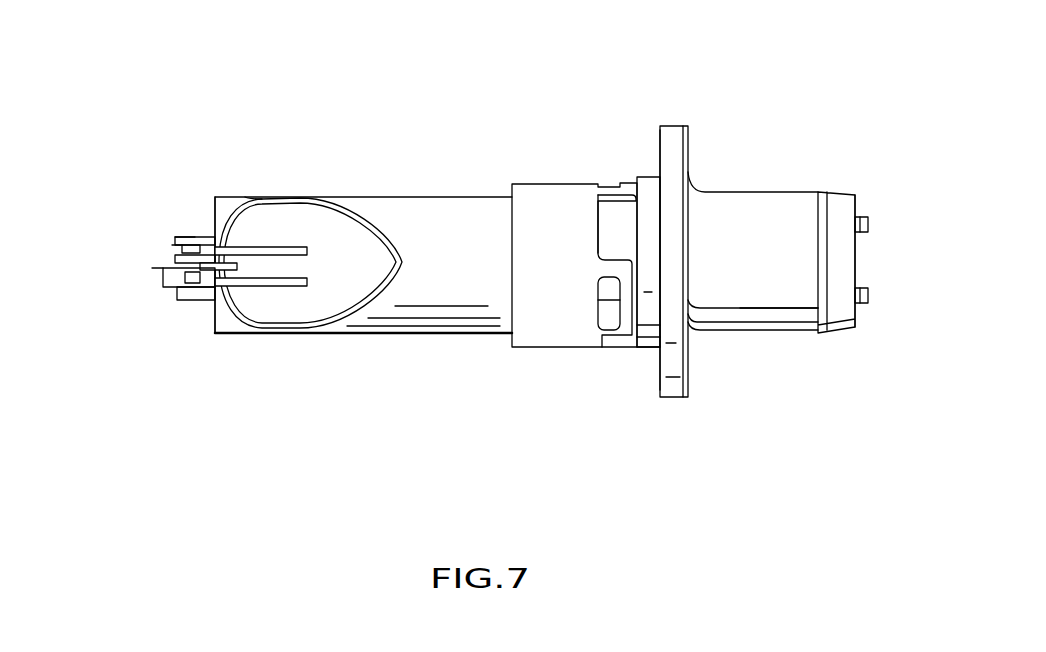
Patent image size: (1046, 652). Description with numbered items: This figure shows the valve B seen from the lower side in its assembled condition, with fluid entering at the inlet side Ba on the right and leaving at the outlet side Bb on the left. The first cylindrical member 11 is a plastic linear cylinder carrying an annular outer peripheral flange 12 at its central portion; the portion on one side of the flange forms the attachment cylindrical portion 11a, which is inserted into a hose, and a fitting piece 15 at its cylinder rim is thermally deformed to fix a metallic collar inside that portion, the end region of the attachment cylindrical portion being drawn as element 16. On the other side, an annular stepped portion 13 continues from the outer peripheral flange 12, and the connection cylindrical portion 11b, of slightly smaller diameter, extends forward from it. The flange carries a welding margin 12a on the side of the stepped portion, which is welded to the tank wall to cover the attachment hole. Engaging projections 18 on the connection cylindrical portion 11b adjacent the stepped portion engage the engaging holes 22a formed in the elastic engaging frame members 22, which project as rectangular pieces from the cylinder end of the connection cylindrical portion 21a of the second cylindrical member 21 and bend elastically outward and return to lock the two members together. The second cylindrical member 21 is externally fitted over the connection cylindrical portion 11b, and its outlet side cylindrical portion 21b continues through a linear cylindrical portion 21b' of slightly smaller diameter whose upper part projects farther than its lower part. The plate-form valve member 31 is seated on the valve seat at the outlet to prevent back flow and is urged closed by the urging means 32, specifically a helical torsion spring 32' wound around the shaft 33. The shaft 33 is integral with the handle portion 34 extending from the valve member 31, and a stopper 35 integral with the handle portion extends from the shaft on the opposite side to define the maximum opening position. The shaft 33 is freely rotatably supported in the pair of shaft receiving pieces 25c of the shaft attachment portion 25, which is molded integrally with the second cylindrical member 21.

The valve B is at (752, 148).
The inlet side Ba is at (818, 333).
The outlet side Bb is at (243, 335).
The first cylindrical member 11 is at (729, 333).
The attachment cylindrical portion 11a is at (777, 331).
The connection cylindrical portion 11b is at (628, 347).
The outer peripheral flange 12 is at (672, 125).
The welding margin 12a is at (657, 143).
The stepped portion 13 is at (647, 347).
The fitting piece 15 is at (866, 224).
The end cap 16 is at (822, 192).
The engaging projections 18 is at (590, 336).
The second cylindrical member 21 is at (480, 333).
The connection cylindrical portion 21a is at (510, 347).
The outlet side cylindrical portion 21b is at (423, 387).
The linear cylindrical portion 21b' is at (312, 214).
The elastic engaging frame member 22 is at (617, 338).
The engaging hole 22a is at (600, 330).
The shaft attachment portion 25 is at (215, 197).
The shaft receiving pieces 25c is at (193, 237).
The valve member 31 is at (329, 295).
The urging means 32 is at (181, 235).
The helical torsion spring 32' is at (218, 266).
The shaft 33 is at (172, 244).
The handle portion 34 is at (200, 282).
The stopper 35 is at (172, 288).